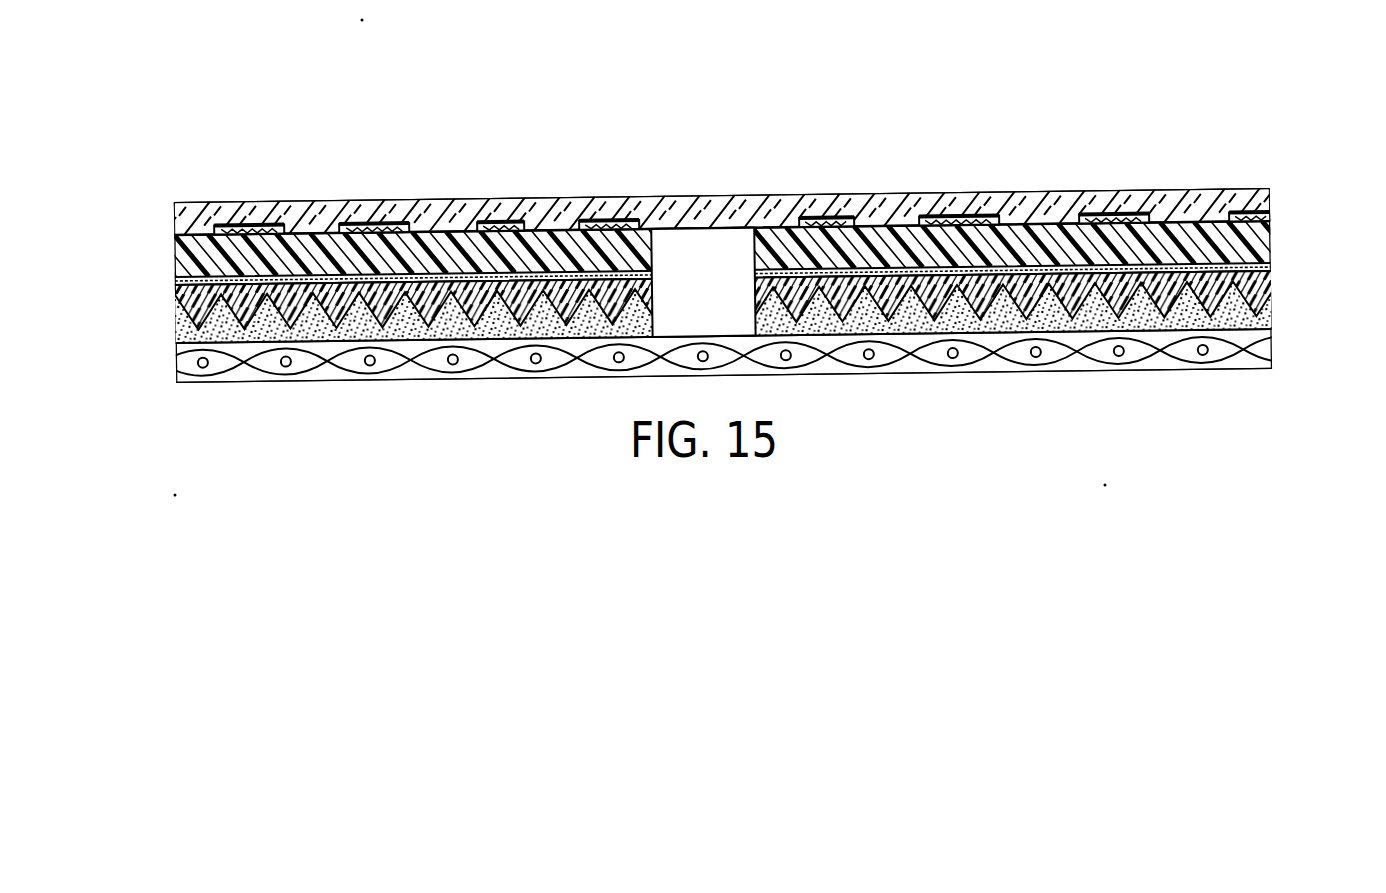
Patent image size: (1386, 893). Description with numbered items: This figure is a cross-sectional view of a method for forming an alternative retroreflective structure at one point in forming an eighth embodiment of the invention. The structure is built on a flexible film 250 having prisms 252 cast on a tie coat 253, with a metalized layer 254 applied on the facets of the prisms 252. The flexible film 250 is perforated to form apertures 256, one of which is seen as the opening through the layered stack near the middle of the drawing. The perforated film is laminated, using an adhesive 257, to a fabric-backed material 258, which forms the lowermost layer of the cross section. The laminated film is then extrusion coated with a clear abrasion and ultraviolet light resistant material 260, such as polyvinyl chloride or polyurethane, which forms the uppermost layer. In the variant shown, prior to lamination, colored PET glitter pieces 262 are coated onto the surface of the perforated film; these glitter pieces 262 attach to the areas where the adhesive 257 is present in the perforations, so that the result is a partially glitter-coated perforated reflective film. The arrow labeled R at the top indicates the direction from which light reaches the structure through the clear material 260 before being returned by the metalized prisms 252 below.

The flexible film 250 is at (1272, 242).
The prisms 252 is at (180, 298).
The tie coat 253 is at (177, 283).
The metalized layer 254 is at (1272, 319).
The apertures 256 is at (692, 245).
The adhesive 257 is at (178, 330).
The fabric-backed material 258 is at (290, 383).
The clear abrasion and ultraviolet light resistant material 260 is at (878, 193).
The colored PET glitter pieces 262 is at (386, 223).
The incident light direction R is at (1070, 112).